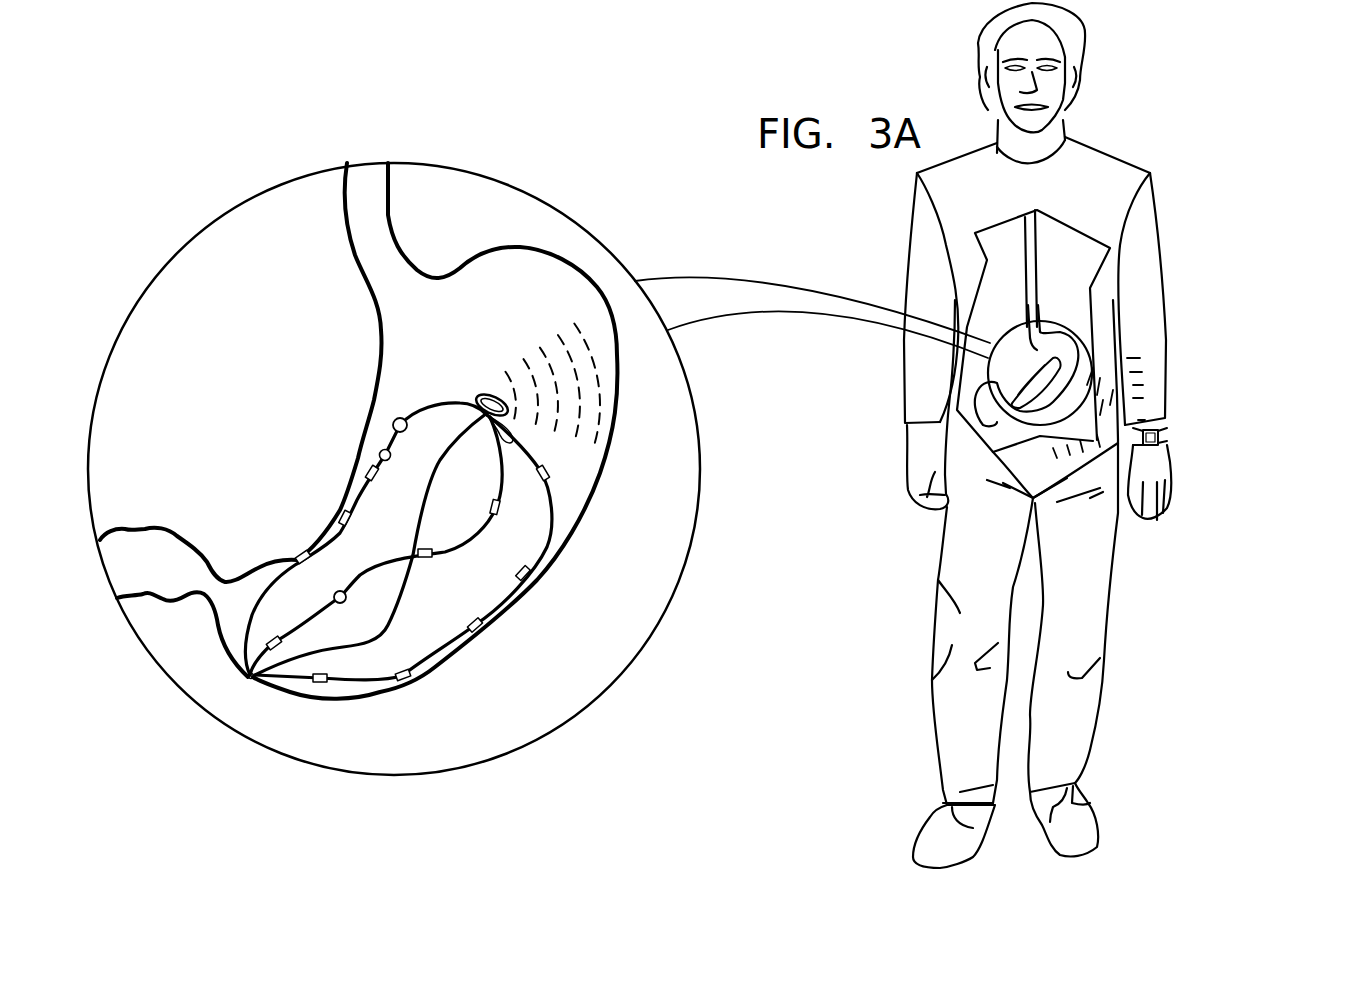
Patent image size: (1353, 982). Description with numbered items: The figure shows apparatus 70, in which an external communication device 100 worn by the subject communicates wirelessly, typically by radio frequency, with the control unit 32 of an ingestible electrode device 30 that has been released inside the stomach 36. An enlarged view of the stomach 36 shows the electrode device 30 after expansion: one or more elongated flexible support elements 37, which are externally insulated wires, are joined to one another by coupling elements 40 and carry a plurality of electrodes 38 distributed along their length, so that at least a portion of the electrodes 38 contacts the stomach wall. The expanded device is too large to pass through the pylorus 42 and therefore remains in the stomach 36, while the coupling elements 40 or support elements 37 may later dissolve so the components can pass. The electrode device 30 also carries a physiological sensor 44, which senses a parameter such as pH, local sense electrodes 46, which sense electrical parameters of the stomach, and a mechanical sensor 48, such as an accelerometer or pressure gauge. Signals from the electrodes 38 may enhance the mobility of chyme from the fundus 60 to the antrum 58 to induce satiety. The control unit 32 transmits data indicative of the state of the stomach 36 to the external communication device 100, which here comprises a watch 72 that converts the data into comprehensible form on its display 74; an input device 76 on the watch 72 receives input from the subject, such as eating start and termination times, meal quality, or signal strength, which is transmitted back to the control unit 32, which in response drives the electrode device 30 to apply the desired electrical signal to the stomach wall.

The electrode device 30 is at (416, 352).
The control unit 32 is at (490, 397).
The stomach 36 is at (598, 546).
The elongated flexible support elements 37 is at (379, 455).
The electrodes 38 is at (306, 553).
The coupling elements 40 is at (508, 436).
The pylorus 42 is at (219, 578).
The physiological sensor 44 is at (333, 596).
The local sense electrodes 46 is at (427, 558).
The mechanical sensor 48 is at (400, 418).
The antrum 58 is at (318, 686).
The fundus 60 is at (618, 388).
The apparatus 70 is at (922, 361).
The watch 72 is at (1163, 436).
The display 74 is at (1155, 428).
The input device 76 is at (1165, 448).
The external communication device 100 is at (1215, 405).